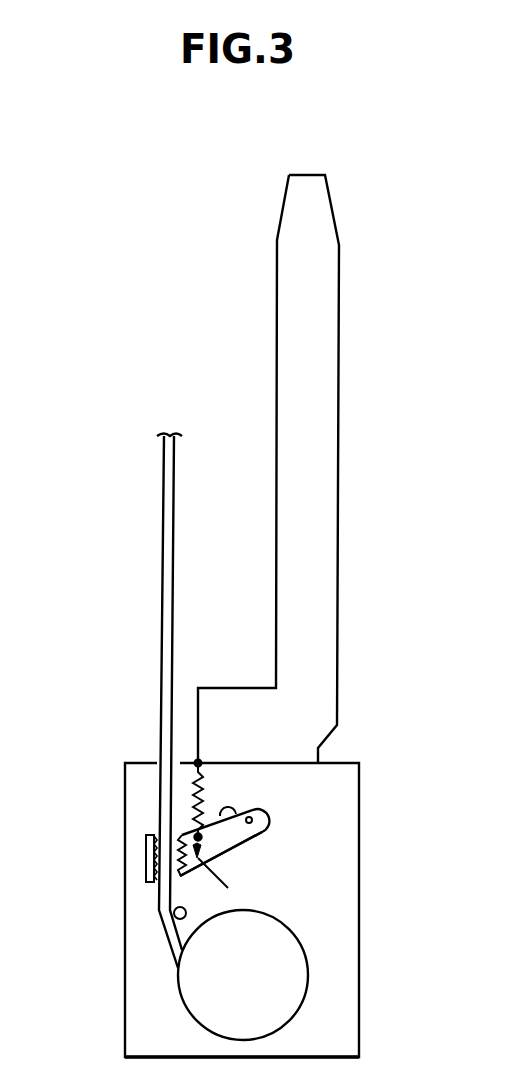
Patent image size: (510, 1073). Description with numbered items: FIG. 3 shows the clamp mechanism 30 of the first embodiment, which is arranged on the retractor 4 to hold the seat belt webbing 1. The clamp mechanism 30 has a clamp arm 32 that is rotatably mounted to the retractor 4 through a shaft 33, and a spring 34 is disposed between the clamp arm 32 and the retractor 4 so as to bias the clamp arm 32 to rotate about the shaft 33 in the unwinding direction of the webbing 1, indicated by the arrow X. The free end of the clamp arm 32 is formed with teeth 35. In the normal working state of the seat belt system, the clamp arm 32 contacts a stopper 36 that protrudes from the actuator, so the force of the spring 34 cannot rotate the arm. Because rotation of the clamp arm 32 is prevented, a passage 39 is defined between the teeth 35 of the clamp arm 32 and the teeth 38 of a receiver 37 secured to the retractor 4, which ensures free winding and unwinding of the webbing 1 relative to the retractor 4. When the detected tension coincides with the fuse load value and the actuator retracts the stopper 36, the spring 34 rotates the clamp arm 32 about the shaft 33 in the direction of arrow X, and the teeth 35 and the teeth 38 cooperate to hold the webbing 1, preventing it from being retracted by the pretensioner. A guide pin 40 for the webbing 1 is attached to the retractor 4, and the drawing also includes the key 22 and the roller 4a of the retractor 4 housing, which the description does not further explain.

The webbing 1 is at (162, 515).
The key 22 is at (327, 477).
The retractor 4 is at (127, 775).
The roller / cylindrical member of housing 4a is at (308, 968).
The spring 34 is at (207, 790).
The clamp mechanism 30 is at (270, 835).
The clamp arm 32 is at (240, 840).
The teeth 35 is at (183, 877).
The stopper 36 is at (236, 806).
The shaft 33 is at (229, 838).
The teeth 38 is at (153, 858).
The passage 39 is at (157, 835).
The receiver 37 is at (147, 868).
The guide pin 40 is at (174, 917).